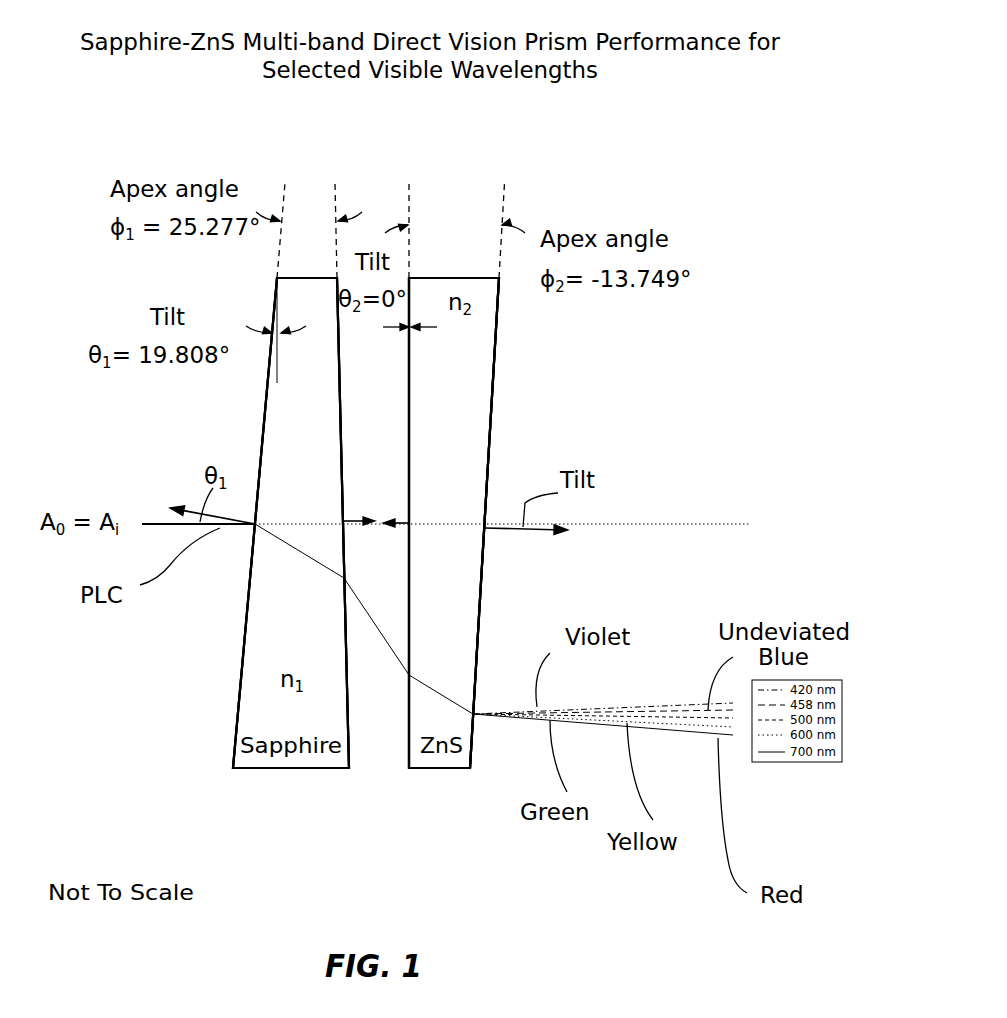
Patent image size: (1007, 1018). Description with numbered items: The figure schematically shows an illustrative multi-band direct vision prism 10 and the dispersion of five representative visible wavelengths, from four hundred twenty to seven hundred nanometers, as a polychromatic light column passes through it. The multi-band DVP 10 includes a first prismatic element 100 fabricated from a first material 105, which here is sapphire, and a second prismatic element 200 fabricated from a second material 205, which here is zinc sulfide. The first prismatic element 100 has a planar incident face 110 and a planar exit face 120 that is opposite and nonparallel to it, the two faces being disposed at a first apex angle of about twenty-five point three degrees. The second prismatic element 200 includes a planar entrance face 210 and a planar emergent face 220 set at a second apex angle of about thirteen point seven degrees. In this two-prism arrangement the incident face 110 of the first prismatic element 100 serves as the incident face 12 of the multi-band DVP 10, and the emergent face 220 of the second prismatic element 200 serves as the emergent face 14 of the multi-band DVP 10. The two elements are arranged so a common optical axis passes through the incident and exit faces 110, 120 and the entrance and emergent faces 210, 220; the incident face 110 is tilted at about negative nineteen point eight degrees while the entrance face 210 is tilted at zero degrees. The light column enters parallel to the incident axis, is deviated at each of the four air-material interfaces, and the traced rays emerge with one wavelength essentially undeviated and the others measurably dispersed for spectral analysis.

The multi-band direct vision prism 10 is at (263, 523).
The incident face of the multi-band DVP 12 is at (267, 373).
The emergent face of the multi-band DVP 14 is at (492, 482).
The first prismatic element 100 is at (233, 723).
The first material 105 is at (283, 763).
The incident face 110 is at (247, 580).
The exit face 120 is at (350, 712).
The second prismatic element 200 is at (480, 360).
The second material 205 is at (447, 765).
The entrance face 210 is at (409, 596).
The emergent face 220 is at (492, 413).